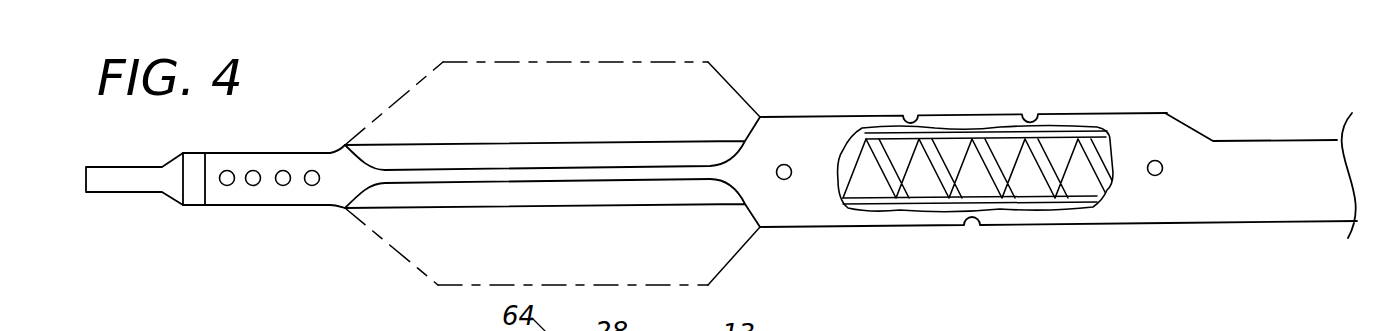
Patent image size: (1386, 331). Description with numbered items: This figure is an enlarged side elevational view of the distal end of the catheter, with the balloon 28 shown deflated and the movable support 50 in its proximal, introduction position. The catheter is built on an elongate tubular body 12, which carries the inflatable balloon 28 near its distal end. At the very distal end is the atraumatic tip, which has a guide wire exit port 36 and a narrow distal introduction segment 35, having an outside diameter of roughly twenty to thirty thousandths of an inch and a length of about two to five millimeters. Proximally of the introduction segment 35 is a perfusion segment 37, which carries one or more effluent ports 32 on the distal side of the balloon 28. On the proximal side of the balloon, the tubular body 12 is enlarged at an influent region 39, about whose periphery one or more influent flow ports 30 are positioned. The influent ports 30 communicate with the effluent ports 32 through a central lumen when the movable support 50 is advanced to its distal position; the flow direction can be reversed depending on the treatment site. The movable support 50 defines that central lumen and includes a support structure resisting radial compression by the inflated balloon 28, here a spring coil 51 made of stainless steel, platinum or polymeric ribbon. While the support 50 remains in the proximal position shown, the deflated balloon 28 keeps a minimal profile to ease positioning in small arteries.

The elongate tubular body 12 is at (1313, 157).
The inflatable balloon 28 is at (500, 153).
The influent flow port 30 is at (1162, 172).
The effluent port 32 is at (284, 171).
The distal introduction segment 35 is at (122, 182).
The guide wire exit port 36 is at (78, 184).
The perfusion segment 37 is at (228, 207).
The influent region 39 is at (1167, 238).
The movable support 50 is at (945, 157).
The spring coil 51 is at (1033, 158).